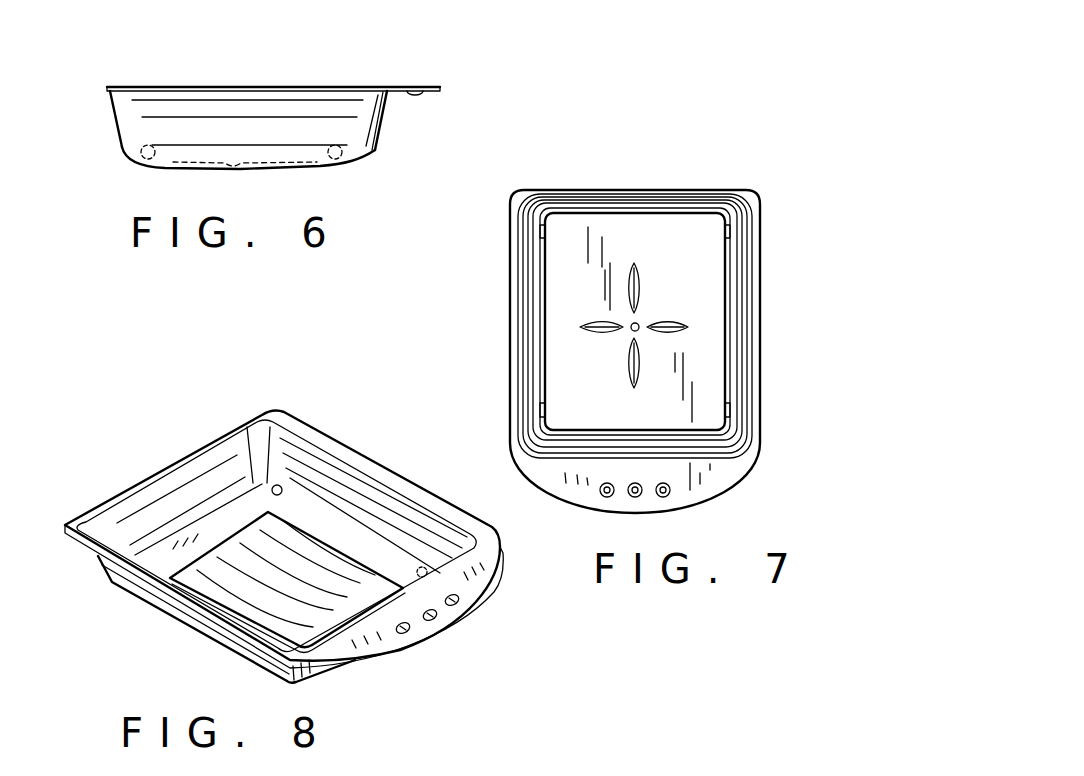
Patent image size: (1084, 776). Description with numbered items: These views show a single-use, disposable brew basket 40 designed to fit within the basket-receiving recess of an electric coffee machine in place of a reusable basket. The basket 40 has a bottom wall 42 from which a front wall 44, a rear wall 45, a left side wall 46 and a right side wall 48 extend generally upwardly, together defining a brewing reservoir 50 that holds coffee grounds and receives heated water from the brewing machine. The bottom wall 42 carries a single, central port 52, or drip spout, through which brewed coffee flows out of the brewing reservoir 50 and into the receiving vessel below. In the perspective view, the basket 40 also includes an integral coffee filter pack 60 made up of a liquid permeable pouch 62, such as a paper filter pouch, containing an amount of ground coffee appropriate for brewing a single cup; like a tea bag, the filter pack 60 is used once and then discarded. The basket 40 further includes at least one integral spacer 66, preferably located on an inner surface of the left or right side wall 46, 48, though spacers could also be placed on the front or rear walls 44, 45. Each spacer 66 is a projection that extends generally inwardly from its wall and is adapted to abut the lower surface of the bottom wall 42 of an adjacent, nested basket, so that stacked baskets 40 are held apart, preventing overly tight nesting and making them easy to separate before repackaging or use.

In FIG. 6, the disposable brew basket 40 is at (360, 45).
In FIG. 7, the disposable brew basket 40 is at (699, 160).
In FIG. 8, the disposable brew basket 40 is at (134, 442).
In FIG. 6, the bottom wall 42 is at (303, 167).
In FIG. 7, the bottom wall 42 is at (664, 237).
In FIG. 8, the bottom wall 42 is at (200, 530).
In FIG. 6, the front wall 44 is at (377, 132).
In FIG. 7, the front wall 44 is at (675, 450).
In FIG. 8, the front wall 44 is at (327, 670).
In FIG. 6, the rear wall 45 is at (117, 129).
In FIG. 7, the rear wall 45 is at (621, 205).
In FIG. 8, the rear wall 45 is at (127, 515).
In FIG. 6, the left side wall 46 is at (260, 117).
In FIG. 7, the left side wall 46 is at (736, 328).
In FIG. 8, the left side wall 46 is at (140, 590).
In FIG. 7, the right side wall 48 is at (530, 328).
In FIG. 8, the right side wall 48 is at (370, 510).
In FIG. 8, the brewing reservoir 50 is at (445, 588).
In FIG. 7, the central port 52 is at (640, 320).
In FIG. 8, the integral coffee filter pack 60 is at (255, 540).
In FIG. 8, the liquid permeable pouch 62 is at (297, 565).
In FIG. 6, the integral spacer 66 is at (150, 145).
In FIG. 8, the integral spacer 66 is at (258, 483).